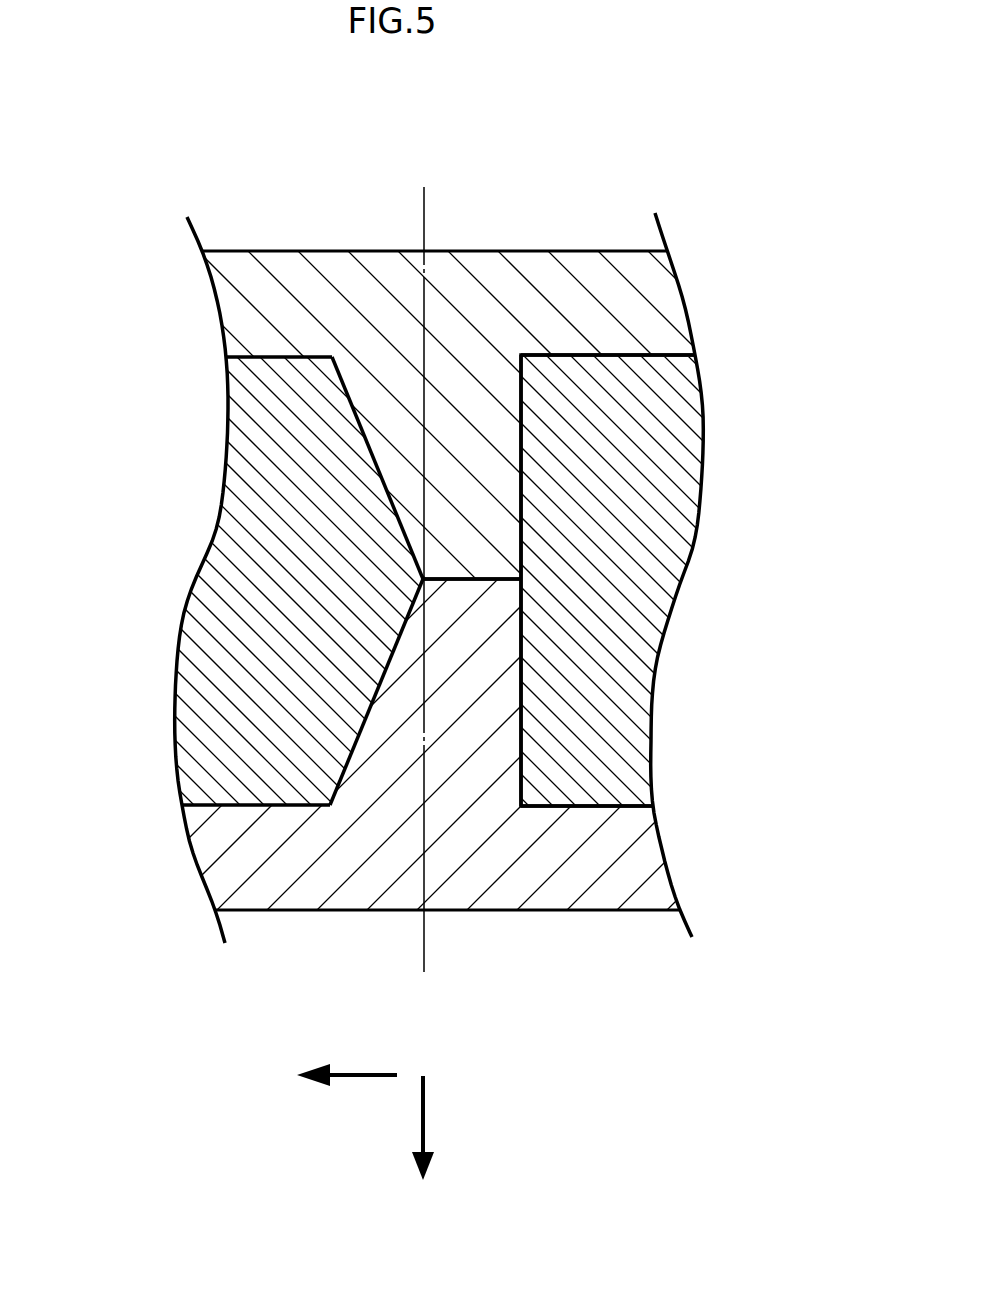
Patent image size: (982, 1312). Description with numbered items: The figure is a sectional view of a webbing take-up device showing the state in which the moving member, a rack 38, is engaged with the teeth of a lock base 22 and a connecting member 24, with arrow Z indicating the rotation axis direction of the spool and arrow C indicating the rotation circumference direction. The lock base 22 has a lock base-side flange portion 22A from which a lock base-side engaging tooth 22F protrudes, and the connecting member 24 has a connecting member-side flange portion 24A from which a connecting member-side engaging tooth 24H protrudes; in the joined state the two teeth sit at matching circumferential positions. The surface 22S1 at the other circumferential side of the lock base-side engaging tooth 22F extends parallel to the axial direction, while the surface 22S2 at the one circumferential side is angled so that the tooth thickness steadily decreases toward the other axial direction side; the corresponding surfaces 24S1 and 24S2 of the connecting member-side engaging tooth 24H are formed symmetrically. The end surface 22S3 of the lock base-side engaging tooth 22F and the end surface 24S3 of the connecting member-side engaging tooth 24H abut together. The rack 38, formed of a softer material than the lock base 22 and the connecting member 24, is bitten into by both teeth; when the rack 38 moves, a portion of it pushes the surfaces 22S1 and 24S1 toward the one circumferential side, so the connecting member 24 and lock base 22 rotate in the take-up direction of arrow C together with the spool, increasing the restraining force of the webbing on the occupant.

The lock base 22 is at (543, 923).
The lock base-side flange portion 22A is at (500, 913).
The lock base-side engaging tooth 22F is at (527, 704).
The surface at other circumferential direction side of lock base-side engaging tooth 22S1 is at (523, 745).
The surface at one circumferential direction side of lock base-side engaging tooth 22S2 is at (347, 762).
The end surface at other axial direction side of lock base-side engaging tooth 22S3 is at (483, 577).
The connecting member 24 is at (512, 248).
The connecting member-side flange portion 24A is at (574, 251).
The connecting member-side engaging tooth 24H is at (527, 406).
The surface at other circumferential direction side of connecting member-side engagi 24S1 is at (523, 507).
The surface at one circumferential direction side of connecting member-side engaging 24S2 is at (370, 458).
The end surface at one axial direction side of connecting member-side engaging tooth 24S3 is at (481, 580).
The rack 38 is at (265, 418).
The arrow C is at (362, 1075).
The arrow Z is at (427, 1127).